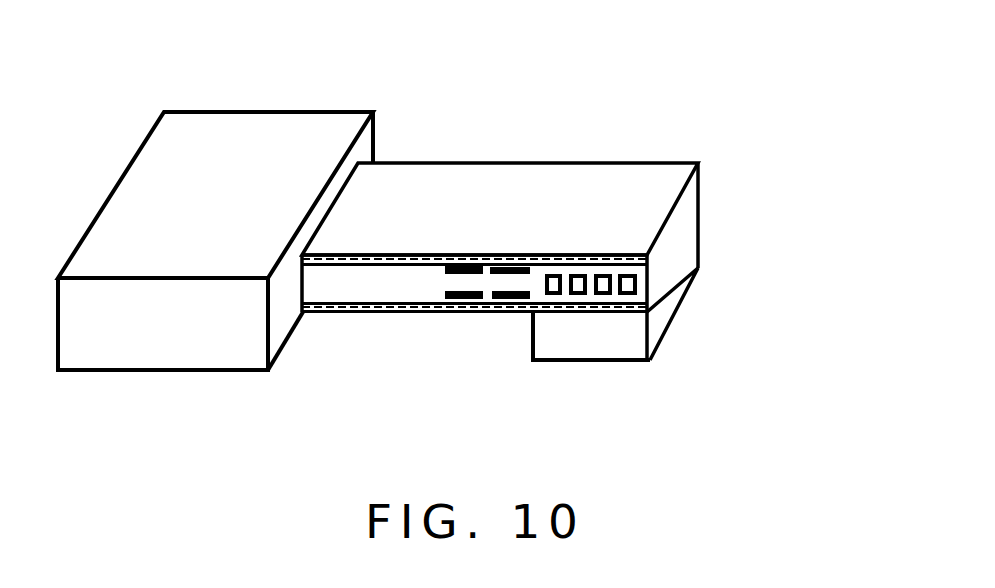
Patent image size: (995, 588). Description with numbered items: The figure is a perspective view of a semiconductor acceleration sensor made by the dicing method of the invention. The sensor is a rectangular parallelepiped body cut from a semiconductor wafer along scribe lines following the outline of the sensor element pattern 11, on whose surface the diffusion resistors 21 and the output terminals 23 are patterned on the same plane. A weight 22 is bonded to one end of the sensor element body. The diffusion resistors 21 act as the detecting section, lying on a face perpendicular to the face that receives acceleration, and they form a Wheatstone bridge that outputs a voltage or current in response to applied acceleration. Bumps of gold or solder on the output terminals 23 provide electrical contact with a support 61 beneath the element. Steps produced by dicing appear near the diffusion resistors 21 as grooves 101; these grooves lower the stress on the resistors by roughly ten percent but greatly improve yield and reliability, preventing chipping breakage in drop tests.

The sensor element pattern 11 is at (487, 195).
The weight 22 is at (248, 152).
The groove 101 is at (613, 253).
The diffusion resistor 21 is at (468, 312).
The output terminal 23 is at (635, 285).
The support 61 is at (613, 342).